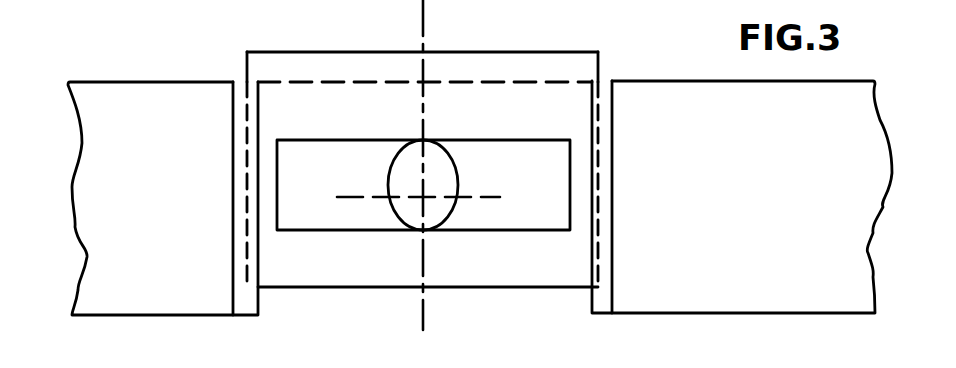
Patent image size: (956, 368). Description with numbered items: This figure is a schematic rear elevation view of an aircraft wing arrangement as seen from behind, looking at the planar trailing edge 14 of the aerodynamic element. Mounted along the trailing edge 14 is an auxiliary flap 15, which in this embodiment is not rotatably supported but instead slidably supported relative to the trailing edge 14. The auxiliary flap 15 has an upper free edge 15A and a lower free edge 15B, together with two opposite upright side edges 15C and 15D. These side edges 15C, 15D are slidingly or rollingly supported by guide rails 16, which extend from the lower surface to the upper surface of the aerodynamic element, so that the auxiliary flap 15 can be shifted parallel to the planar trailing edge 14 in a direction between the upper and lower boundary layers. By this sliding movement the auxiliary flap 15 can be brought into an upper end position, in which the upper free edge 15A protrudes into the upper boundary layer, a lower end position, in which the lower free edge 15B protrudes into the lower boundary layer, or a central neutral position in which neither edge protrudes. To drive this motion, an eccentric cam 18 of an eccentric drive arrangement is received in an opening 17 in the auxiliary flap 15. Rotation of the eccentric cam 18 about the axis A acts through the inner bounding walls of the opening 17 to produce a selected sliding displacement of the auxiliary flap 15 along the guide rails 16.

The planar trailing edge 14 is at (190, 287).
The auxiliary flap 15 is at (454, 184).
The upper free edge 15A is at (505, 49).
The lower free edge 15B is at (387, 288).
The upright side edge 15C is at (600, 61).
The upright side edge 15D is at (247, 67).
The guide rails 16 is at (247, 83).
The opening 17 is at (533, 208).
The eccentric cam 18 is at (437, 183).
The axis A is at (420, 197).